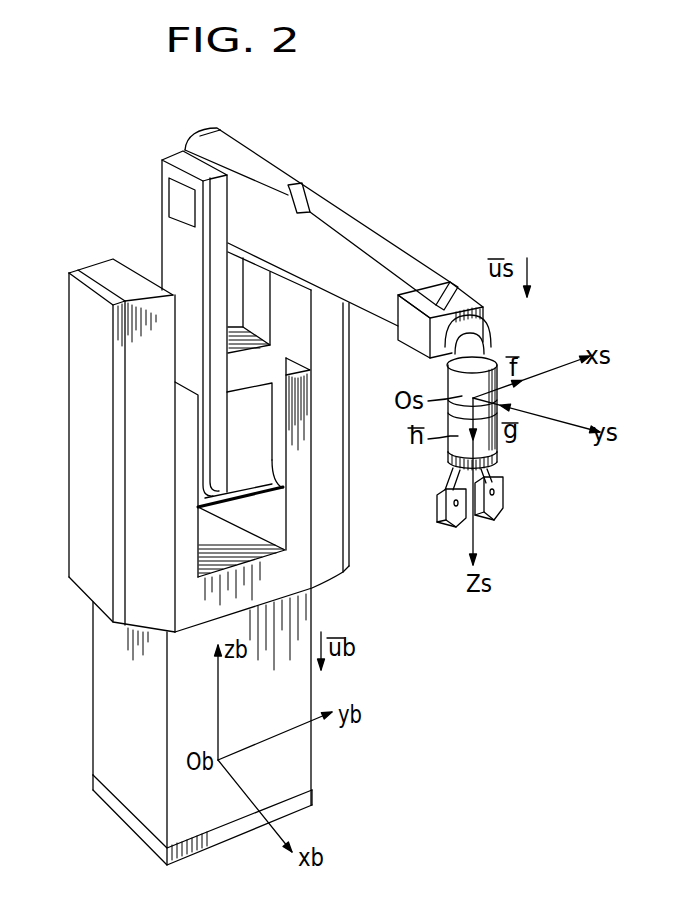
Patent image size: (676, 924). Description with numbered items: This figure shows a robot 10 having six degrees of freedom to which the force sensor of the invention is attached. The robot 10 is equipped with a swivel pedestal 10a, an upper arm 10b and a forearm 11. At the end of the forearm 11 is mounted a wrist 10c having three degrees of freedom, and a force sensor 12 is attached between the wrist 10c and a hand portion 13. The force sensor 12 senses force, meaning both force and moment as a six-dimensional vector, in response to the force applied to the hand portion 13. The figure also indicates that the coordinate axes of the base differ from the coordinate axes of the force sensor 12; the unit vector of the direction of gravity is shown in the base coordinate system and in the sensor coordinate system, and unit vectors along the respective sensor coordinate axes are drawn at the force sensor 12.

The robot 10 is at (107, 737).
The swivel pedestal 10a is at (128, 673).
The upper arm 10b is at (178, 246).
The wrist 10c is at (478, 342).
The forearm 11 is at (380, 256).
The force sensor 12 is at (450, 363).
The hand portion 13 is at (496, 460).